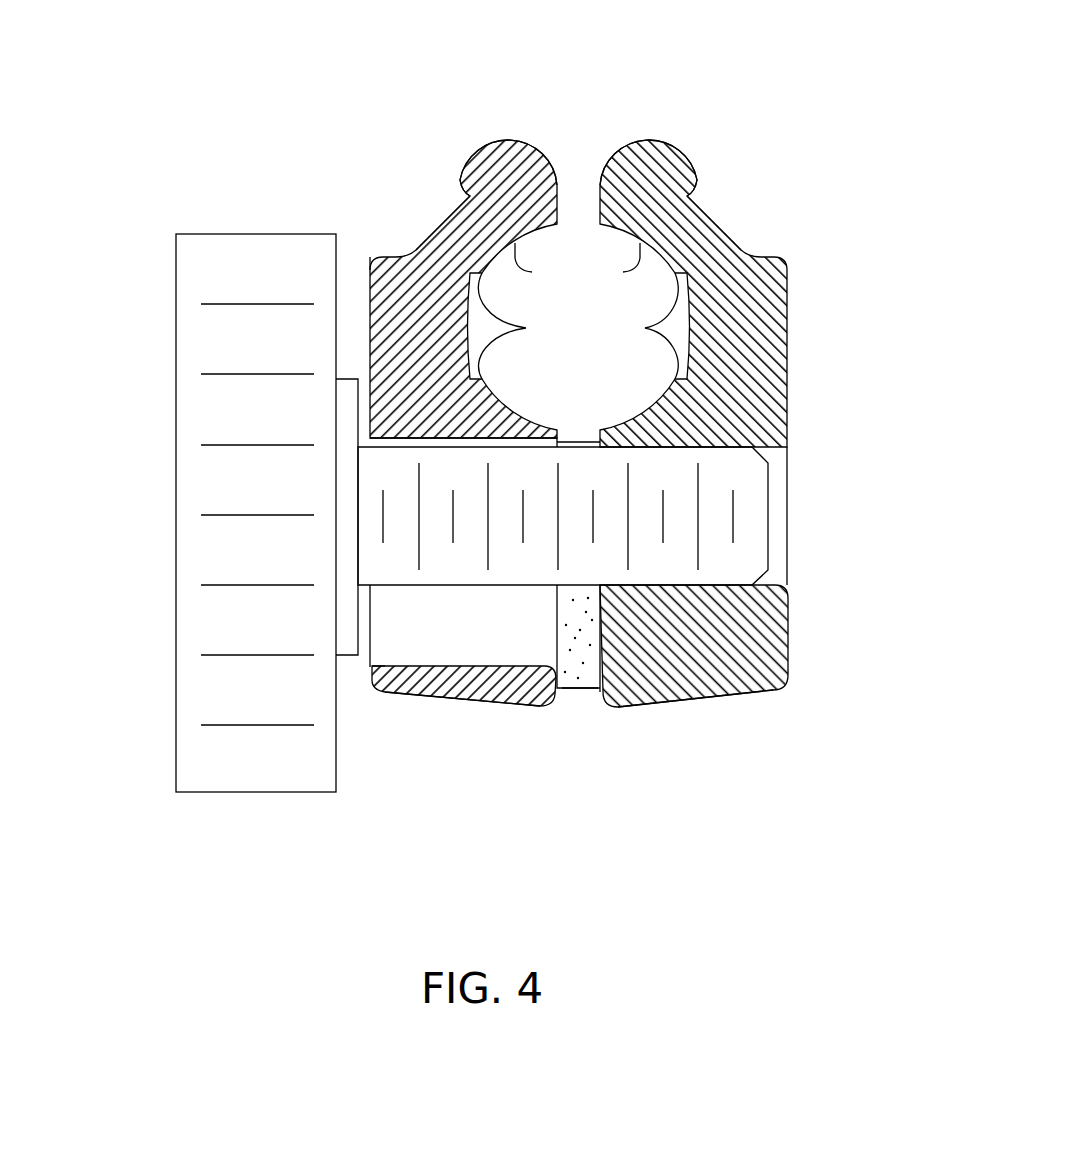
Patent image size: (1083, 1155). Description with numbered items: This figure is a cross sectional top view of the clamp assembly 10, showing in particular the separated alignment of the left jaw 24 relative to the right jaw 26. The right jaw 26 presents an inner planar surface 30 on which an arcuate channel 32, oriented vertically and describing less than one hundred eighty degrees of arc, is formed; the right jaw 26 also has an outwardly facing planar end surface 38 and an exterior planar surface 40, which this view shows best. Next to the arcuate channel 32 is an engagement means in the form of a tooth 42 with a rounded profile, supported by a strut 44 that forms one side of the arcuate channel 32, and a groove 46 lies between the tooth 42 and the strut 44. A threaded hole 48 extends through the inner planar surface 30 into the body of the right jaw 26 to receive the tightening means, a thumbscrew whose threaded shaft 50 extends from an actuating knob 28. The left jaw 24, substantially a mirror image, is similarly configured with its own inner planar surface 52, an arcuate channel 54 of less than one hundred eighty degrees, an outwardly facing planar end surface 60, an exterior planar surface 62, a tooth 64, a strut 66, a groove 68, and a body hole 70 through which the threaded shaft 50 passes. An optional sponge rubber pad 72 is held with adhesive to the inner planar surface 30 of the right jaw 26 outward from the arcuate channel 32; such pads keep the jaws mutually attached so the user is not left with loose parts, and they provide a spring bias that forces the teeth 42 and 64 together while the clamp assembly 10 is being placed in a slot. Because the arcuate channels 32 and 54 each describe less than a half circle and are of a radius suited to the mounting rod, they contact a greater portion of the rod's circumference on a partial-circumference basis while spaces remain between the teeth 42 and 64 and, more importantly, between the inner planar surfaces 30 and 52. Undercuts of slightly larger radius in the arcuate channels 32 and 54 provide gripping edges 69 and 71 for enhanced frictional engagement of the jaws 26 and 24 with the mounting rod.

The clamp assembly 10 is at (835, 100).
The left jaw 24 is at (460, 707).
The right jaw 26 is at (712, 707).
The actuating knob 28 is at (229, 404).
The inner planar surface 30 is at (595, 672).
The arcuate channel 32 is at (607, 262).
The outwardly facing planar end surface 38 is at (753, 697).
The exterior planar surface 40 is at (787, 343).
The tooth 42 is at (653, 157).
The strut 44 is at (686, 242).
The groove 46 is at (686, 198).
The threaded hole 48 is at (779, 535).
The threaded shaft 50 is at (748, 496).
The inner planar surface 52 is at (568, 690).
The arcuate channel 54 is at (540, 262).
The outwardly facing planar end surface 60 is at (495, 708).
The exterior planar surface 62 is at (370, 669).
The tooth 64 is at (513, 163).
The strut 66 is at (467, 233).
The groove 68 is at (473, 198).
The gripping edge 69 is at (636, 326).
The body hole 70 is at (450, 613).
The gripping edge 71 is at (522, 326).
The sponge rubber pad 72 is at (585, 690).